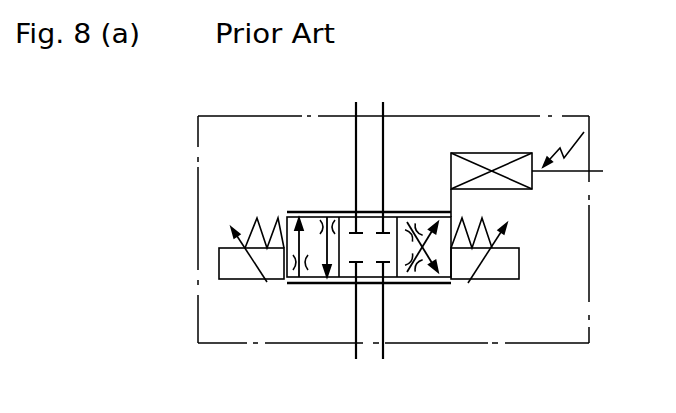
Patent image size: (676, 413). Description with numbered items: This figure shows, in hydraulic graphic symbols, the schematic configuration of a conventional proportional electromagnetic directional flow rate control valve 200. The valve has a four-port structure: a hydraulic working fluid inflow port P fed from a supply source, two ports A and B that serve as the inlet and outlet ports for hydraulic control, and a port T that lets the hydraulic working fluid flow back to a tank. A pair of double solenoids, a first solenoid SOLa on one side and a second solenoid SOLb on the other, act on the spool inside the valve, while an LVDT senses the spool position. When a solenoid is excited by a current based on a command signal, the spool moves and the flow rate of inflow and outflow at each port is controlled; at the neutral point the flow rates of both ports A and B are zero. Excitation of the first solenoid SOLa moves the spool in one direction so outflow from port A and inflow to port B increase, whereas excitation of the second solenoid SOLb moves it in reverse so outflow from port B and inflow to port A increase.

The proportional electromagnetic directional flow rate control valve 200 is at (198, 193).
The port A is at (355, 153).
The port B is at (385, 153).
The hydraulic working fluid inflow port P is at (353, 324).
The port T is at (382, 324).
The first solenoid SOLa is at (251, 265).
The second solenoid SOLb is at (485, 265).
The element LVDT is at (527, 174).